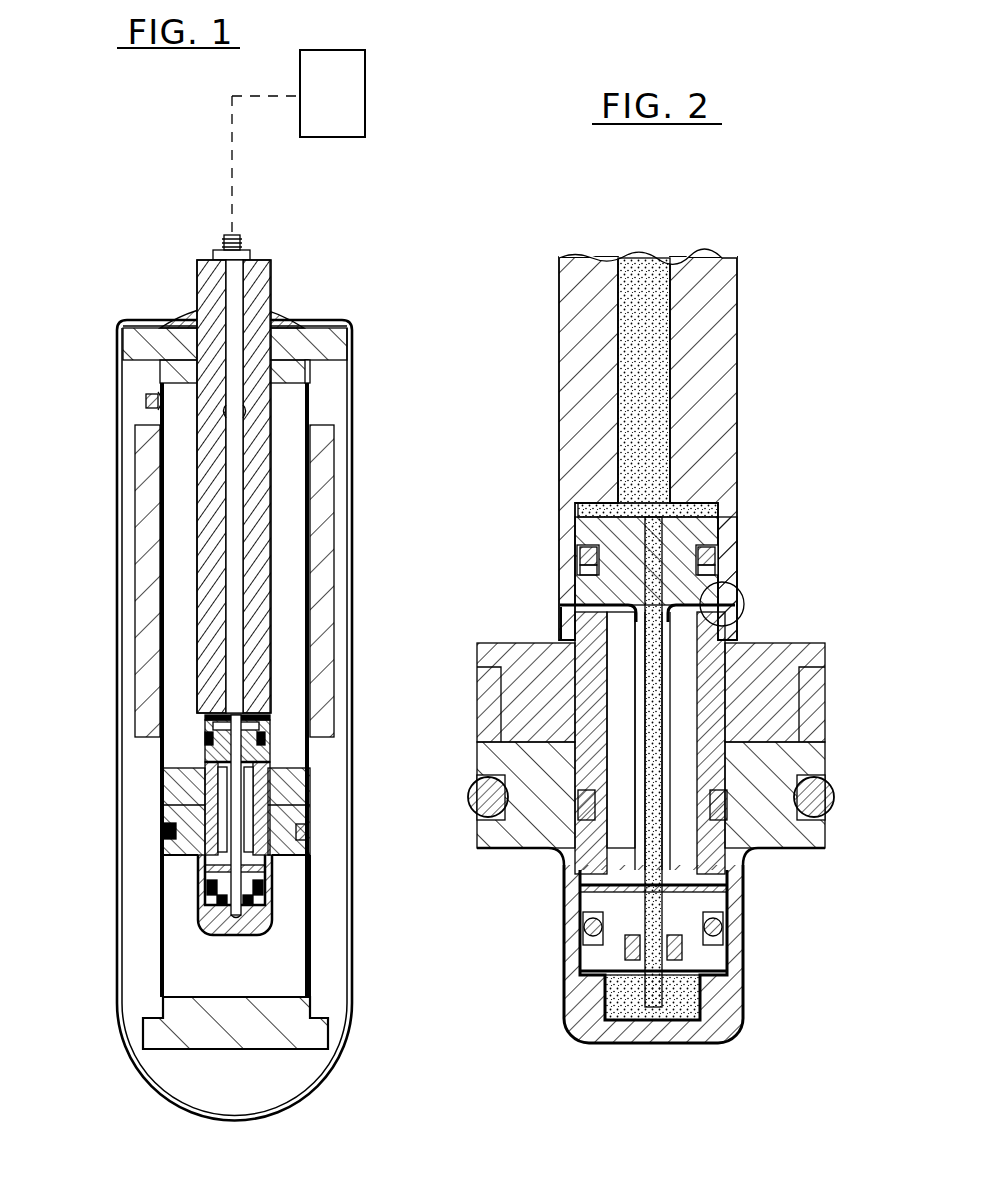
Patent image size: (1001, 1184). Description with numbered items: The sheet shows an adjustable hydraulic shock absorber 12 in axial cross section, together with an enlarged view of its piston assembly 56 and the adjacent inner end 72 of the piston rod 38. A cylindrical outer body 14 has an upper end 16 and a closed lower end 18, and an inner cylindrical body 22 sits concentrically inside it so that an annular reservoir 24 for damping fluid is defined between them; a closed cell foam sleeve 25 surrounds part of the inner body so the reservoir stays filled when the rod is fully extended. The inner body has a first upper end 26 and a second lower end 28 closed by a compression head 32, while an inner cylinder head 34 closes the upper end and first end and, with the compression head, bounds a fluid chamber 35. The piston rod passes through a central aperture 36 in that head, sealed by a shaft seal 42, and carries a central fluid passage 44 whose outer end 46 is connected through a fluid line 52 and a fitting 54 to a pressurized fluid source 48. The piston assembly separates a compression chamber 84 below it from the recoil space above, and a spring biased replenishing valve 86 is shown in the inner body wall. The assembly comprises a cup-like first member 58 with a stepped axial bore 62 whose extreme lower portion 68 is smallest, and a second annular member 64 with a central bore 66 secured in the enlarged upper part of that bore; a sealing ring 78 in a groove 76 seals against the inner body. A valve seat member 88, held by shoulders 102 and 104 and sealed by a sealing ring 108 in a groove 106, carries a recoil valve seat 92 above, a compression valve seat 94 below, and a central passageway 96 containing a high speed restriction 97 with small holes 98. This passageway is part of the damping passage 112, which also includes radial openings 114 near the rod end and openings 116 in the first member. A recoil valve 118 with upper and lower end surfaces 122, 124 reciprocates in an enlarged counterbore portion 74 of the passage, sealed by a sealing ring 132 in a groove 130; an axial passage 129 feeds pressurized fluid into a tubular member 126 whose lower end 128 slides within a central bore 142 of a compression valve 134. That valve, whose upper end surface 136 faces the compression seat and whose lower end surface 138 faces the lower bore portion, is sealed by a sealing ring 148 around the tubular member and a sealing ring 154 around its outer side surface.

In FIG. 1, the shock absorber 12 is at (122, 277).
In FIG. 2, the shock absorber 12 is at (752, 368).
In FIG. 1, the outer body 14 is at (118, 618).
In FIG. 1, the upper end 16 is at (270, 352).
In FIG. 1, the closed lower end 18 is at (315, 1090).
In FIG. 1, the inner cylindrical body 22 is at (160, 946).
In FIG. 1, the annular reservoir 24 is at (333, 412).
In FIG. 1, the closed cell foam sleeve 25 is at (143, 500).
In FIG. 1, the first upper end 26 is at (312, 400).
In FIG. 1, the second lower end 28 is at (312, 1008).
In FIG. 1, the compression head 32 is at (167, 594).
In FIG. 1, the inner cylinder head 34 is at (350, 330).
In FIG. 1, the fluid chamber 35 is at (286, 533).
In FIG. 1, the central aperture 36 is at (205, 344).
In FIG. 1, the piston rod 38 is at (257, 481).
In FIG. 2, the piston rod 38 is at (715, 286).
In FIG. 1, the shaft seal 42 is at (300, 311).
In FIG. 1, the central fluid passage 44 is at (241, 432).
In FIG. 2, the central fluid passage 44 is at (637, 262).
In FIG. 1, the outer end 46 is at (272, 266).
In FIG. 1, the pressurized fluid source 48 is at (365, 107).
In FIG. 1, the fluid line 52 is at (228, 137).
In FIG. 1, the fitting 54 is at (238, 233).
In FIG. 1, the piston assembly 56 is at (158, 796).
In FIG. 2, the piston assembly 56 is at (472, 718).
In FIG. 1, the first cup-like member 58 is at (185, 858).
In FIG. 2, the first cup-like member 58 is at (482, 738).
In FIG. 1, the stepped axial bore 62 is at (203, 892).
In FIG. 2, the stepped axial bore 62 is at (727, 768).
In FIG. 1, the second annular member 64 is at (309, 768).
In FIG. 2, the second annular member 64 is at (800, 649).
In FIG. 2, the central bore 66 is at (556, 690).
In FIG. 1, the lower portion of bore 68 is at (228, 934).
In FIG. 2, the lower portion of bore 68 is at (590, 1041).
In FIG. 1, the inner end of piston rod 72 is at (203, 734).
In FIG. 2, the inner end of piston rod 72 is at (560, 541).
In FIG. 1, the enlarged counterbore portion 74 is at (268, 716).
In FIG. 2, the enlarged counterbore portion 74 is at (722, 531).
In FIG. 2, the sealing ring groove 76 is at (480, 816).
In FIG. 1, the sealing ring 78 is at (163, 830).
In FIG. 2, the sealing ring 78 is at (466, 790).
In FIG. 1, the compression chamber 84 is at (258, 979).
In FIG. 1, the replenishing valve 86 is at (163, 402).
In FIG. 1, the valve seat member 88 is at (290, 753).
In FIG. 2, the valve seat member 88 is at (520, 846).
In FIG. 2, the recoil valve seat 92 is at (575, 631).
In FIG. 2, the compression valve seat 94 is at (580, 901).
In FIG. 2, the central passageway 96 is at (613, 676).
In FIG. 2, the high speed restriction 97 is at (640, 792).
In FIG. 2, the holes 98 is at (615, 845).
In FIG. 2, the shoulder 102 is at (560, 641).
In FIG. 2, the shoulder 104 is at (760, 882).
In FIG. 2, the sealing ring groove 106 is at (540, 861).
In FIG. 2, the sealing ring 108 is at (752, 851).
In FIG. 1, the damping passage 112 is at (200, 740).
In FIG. 2, the damping passage 112 is at (610, 616).
In FIG. 2, the radial openings 114 is at (558, 636).
In FIG. 2, the radial openings 116 is at (575, 872).
In FIG. 1, the recoil valve 118 is at (264, 745).
In FIG. 2, the recoil valve 118 is at (700, 541).
In FIG. 2, the upper end surface 122 is at (583, 503).
In FIG. 2, the lower end surface 124 is at (678, 625).
In FIG. 2, the tubular member 126 is at (733, 728).
In FIG. 2, the lower end of tubular member 128 is at (680, 1045).
In FIG. 2, the axial passage 129 is at (672, 507).
In FIG. 2, the annular sealing groove 130 is at (583, 572).
In FIG. 2, the sealing ring 132 is at (577, 554).
In FIG. 1, the compression valve 134 is at (270, 895).
In FIG. 2, the compression valve 134 is at (720, 946).
In FIG. 2, the upper end surface 136 is at (585, 926).
In FIG. 2, the lower end surface 138 is at (745, 1011).
In FIG. 2, the central bore 142 is at (735, 972).
In FIG. 2, the sealing ring 148 is at (600, 991).
In FIG. 2, the sealing ring 154 is at (605, 971).